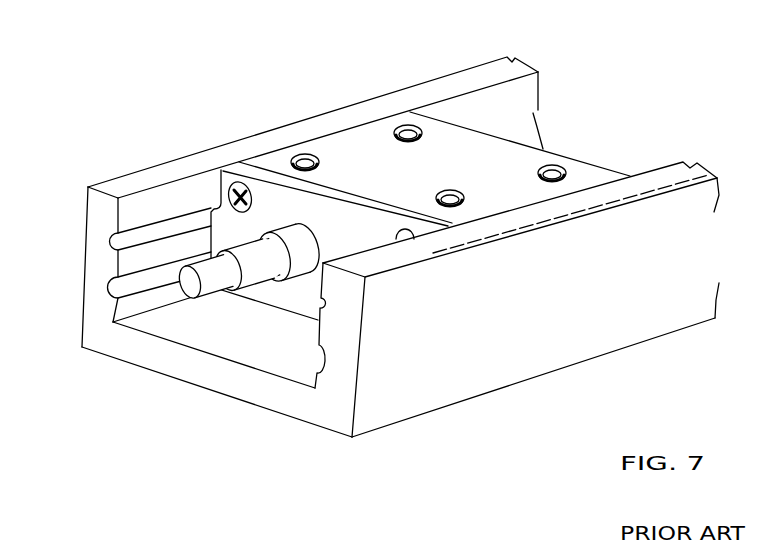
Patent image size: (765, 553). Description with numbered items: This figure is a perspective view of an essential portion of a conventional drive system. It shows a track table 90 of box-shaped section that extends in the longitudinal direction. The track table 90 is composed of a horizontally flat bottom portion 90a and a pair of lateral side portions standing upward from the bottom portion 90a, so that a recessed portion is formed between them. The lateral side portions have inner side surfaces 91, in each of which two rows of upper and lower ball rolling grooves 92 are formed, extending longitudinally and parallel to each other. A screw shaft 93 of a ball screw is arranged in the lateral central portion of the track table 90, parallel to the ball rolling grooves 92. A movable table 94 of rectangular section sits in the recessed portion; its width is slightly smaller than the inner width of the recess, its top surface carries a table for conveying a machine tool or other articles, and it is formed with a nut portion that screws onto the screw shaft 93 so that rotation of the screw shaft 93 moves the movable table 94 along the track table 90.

The track table 90 is at (368, 260).
The bottom portion 90a is at (137, 357).
The inner side surfaces 91 is at (128, 215).
The ball rolling grooves 92 is at (108, 286).
The screw shaft 93 is at (206, 292).
The movable table 94 is at (572, 160).